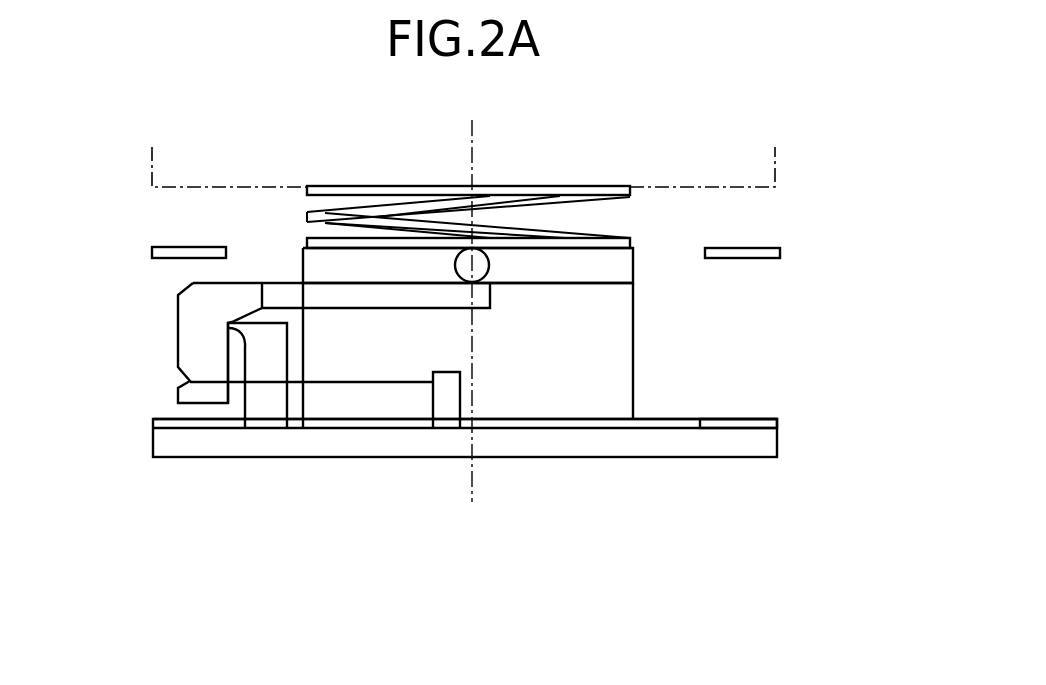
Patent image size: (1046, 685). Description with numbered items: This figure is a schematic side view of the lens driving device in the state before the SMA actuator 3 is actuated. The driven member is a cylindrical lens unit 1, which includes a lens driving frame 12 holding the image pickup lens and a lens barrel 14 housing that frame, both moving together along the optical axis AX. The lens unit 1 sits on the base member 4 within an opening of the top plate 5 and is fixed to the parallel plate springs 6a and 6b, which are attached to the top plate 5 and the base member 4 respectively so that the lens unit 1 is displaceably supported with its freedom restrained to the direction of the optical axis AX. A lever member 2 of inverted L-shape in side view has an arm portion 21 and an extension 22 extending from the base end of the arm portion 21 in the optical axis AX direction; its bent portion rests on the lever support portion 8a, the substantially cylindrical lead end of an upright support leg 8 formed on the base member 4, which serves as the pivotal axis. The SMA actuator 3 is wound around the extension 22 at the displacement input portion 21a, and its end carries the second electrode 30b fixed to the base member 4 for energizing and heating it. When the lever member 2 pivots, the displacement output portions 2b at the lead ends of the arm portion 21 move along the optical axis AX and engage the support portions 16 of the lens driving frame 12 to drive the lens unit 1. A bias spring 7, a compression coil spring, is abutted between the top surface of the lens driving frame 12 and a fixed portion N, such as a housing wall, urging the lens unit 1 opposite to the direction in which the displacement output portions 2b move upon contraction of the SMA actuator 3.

The lens unit 1 is at (594, 337).
The lens driving frame 12 is at (622, 270).
The lens barrel 14 is at (622, 343).
The support portion 16 is at (490, 270).
The lever member 2 is at (329, 340).
The arm portion 21 is at (338, 297).
The extension 22 is at (185, 346).
The holding plate tab 21a is at (190, 381).
The displacement output portion 2b is at (447, 281).
The SMA actuator 3 is at (370, 383).
The second electrode 30b is at (460, 375).
The base member 4 is at (752, 448).
The top plate 5 is at (162, 247).
The parallel plate spring 6a is at (688, 248).
The parallel plate spring 6b is at (673, 420).
The bias spring 7 is at (338, 187).
The support leg 8 is at (267, 405).
The lever support portion 8a is at (236, 330).
The fixed portion N is at (232, 195).
The optical axis AX is at (472, 297).